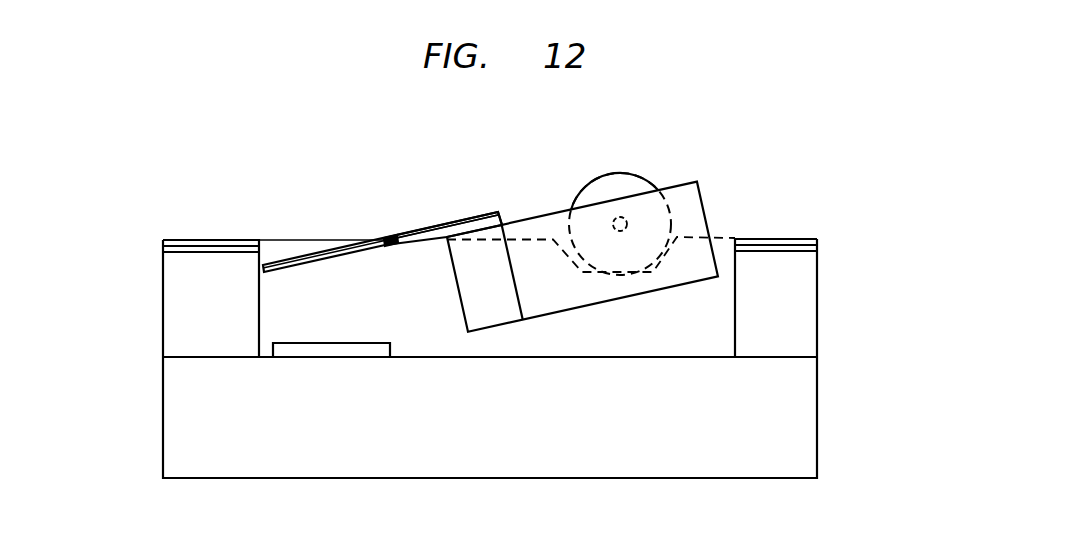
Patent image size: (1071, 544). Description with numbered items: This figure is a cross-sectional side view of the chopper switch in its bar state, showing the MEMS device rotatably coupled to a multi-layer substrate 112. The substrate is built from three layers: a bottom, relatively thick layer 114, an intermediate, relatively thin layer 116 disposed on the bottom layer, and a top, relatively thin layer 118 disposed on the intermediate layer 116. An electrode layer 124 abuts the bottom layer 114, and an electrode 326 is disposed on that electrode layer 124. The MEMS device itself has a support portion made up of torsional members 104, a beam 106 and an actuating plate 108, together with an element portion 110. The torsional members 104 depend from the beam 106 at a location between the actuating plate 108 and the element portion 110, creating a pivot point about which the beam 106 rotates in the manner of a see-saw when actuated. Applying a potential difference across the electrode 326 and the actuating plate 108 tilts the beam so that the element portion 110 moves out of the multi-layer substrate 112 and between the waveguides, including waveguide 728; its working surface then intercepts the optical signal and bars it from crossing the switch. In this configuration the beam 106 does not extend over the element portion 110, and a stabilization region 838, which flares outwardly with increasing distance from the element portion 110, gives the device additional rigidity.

The torsional members 104 is at (393, 237).
The beam 106 is at (478, 215).
The actuating plate 108 is at (295, 257).
The element portion 110 is at (692, 217).
The multi-layer substrate 112 is at (832, 249).
The bottom layer 114 is at (168, 318).
The intermediate layer 116 is at (158, 252).
The top layer 118 is at (160, 242).
The electrode layer 124 is at (494, 430).
The electrode 326 is at (305, 340).
The waveguide 728 is at (627, 187).
The stabilization region 838 is at (480, 305).